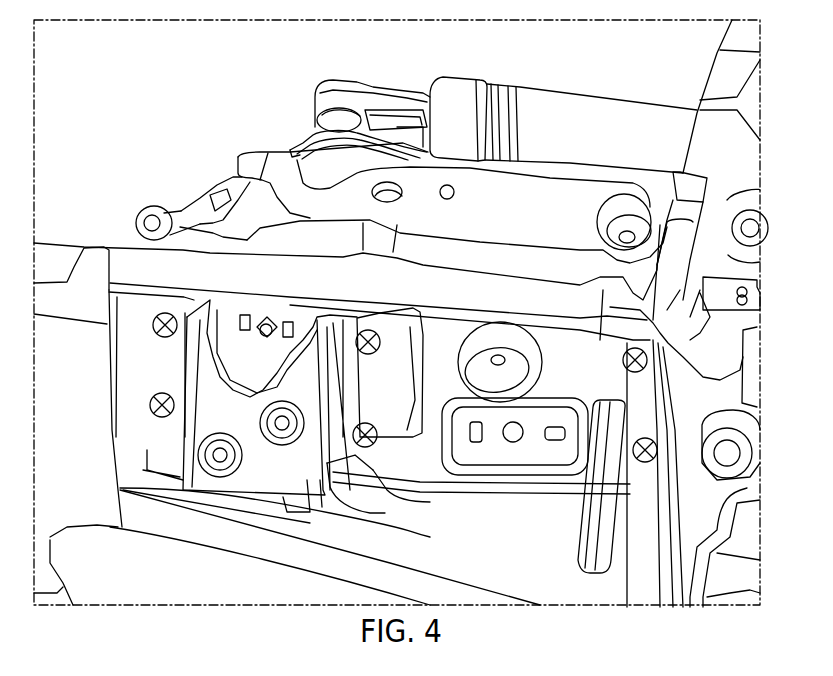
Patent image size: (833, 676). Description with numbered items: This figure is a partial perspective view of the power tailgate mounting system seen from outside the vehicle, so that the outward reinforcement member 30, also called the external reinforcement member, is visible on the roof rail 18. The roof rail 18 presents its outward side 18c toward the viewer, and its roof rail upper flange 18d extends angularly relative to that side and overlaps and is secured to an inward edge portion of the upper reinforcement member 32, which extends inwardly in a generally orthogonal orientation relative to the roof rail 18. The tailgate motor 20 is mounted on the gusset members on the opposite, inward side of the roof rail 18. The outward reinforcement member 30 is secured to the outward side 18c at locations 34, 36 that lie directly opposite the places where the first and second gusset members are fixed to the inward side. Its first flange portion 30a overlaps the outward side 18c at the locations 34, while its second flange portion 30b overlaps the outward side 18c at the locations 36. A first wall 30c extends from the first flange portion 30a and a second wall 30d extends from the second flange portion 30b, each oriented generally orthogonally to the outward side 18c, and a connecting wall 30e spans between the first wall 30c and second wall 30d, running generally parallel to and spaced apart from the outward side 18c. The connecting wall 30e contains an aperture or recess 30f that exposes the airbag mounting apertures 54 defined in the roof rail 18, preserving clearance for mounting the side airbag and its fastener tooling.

The roof rail 18 is at (392, 558).
The outward side of the roof rail 18c is at (400, 387).
The roof rail upper flange 18d is at (171, 267).
The tailgate motor 20 is at (600, 97).
The outward reinforcement member 30 is at (245, 500).
The first flange portion 30a is at (184, 297).
The second flange portion 30b is at (353, 375).
The first wall 30c is at (163, 437).
The second wall 30d is at (337, 480).
The connecting wall 30e is at (290, 505).
The aperture or recess 30f is at (257, 397).
The upper reinforcement member 32 is at (713, 173).
The securing locations of the first flange portion 34 is at (157, 337).
The securing locations of the second flange portion 36 is at (370, 331).
The airbag mounting aperture 54 is at (287, 320).